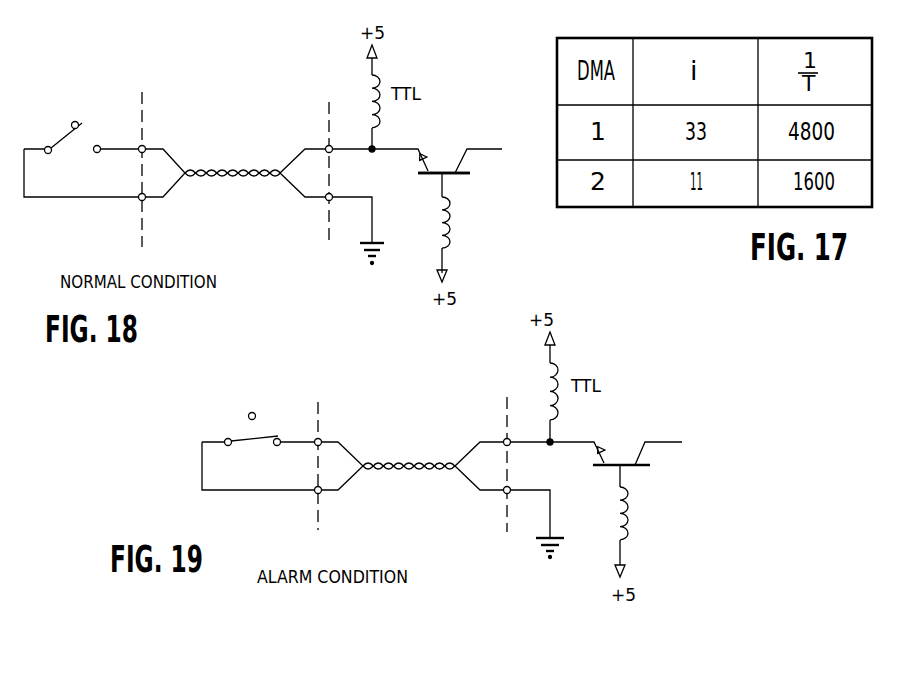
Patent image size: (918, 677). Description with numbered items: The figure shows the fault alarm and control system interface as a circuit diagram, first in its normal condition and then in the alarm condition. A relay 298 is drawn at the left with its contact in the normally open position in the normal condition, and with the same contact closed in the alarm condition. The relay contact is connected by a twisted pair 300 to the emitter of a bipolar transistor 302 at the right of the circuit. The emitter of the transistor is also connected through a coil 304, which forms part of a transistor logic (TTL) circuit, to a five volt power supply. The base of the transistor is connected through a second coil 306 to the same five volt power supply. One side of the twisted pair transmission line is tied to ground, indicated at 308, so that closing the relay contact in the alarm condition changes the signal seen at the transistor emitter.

In FIG. 18, the relay 298 is at (60, 136).
In FIG. 19, the relay 298 is at (238, 435).
In FIG. 18, the twisted pair 300 is at (257, 147).
In FIG. 19, the twisted pair 300 is at (410, 462).
In FIG. 18, the bipolar transistor 302 is at (473, 177).
In FIG. 19, the bipolar transistor 302 is at (640, 468).
In FIG. 18, the coil 304 is at (371, 104).
In FIG. 19, the coil 304 is at (549, 388).
In FIG. 18, the second coil 306 is at (452, 233).
In FIG. 19, the second coil 306 is at (631, 520).
In FIG. 18, the ground 308 is at (380, 240).
In FIG. 19, the ground 308 is at (553, 533).